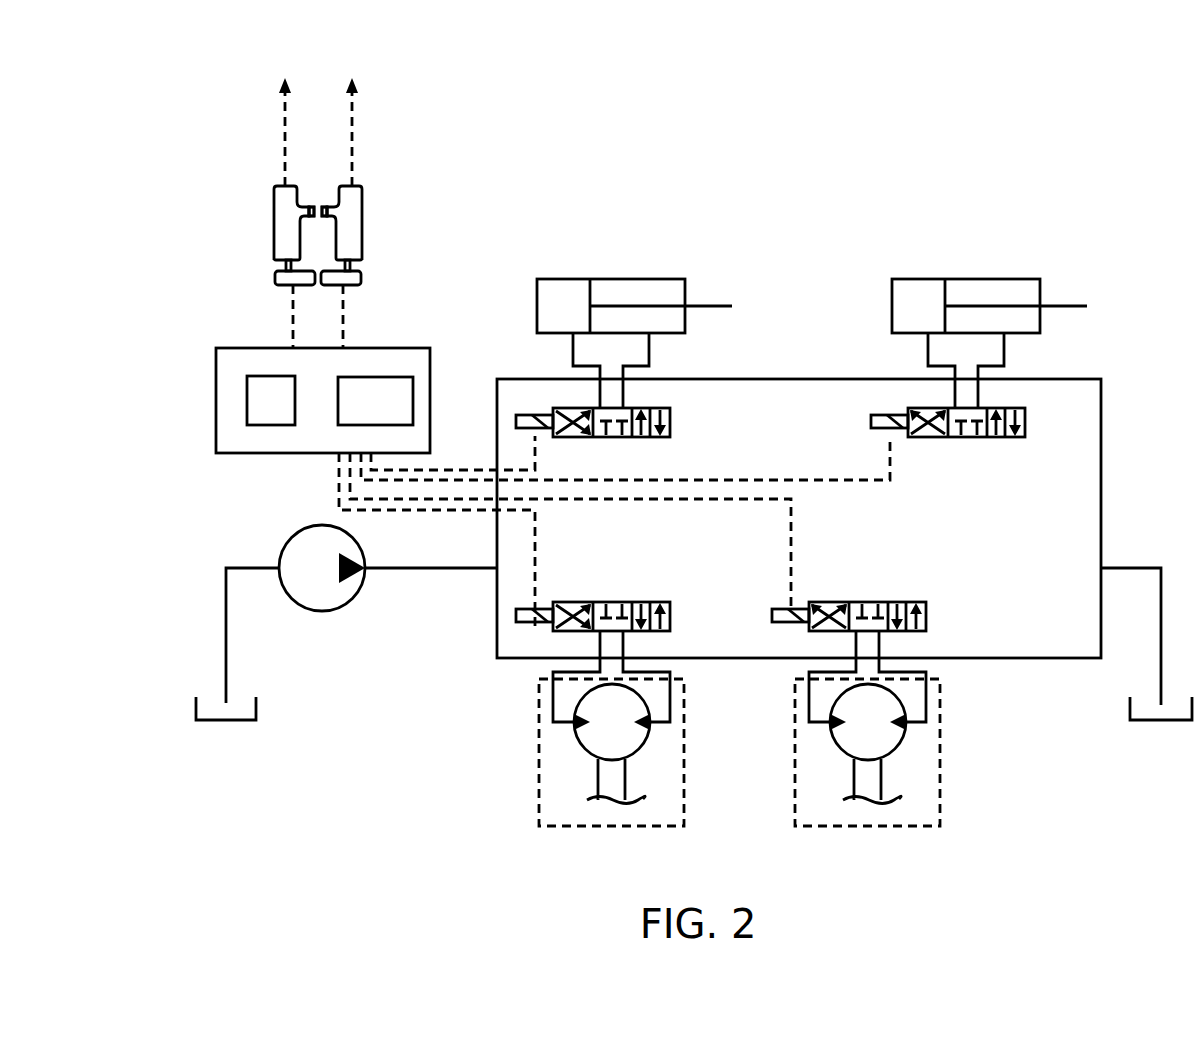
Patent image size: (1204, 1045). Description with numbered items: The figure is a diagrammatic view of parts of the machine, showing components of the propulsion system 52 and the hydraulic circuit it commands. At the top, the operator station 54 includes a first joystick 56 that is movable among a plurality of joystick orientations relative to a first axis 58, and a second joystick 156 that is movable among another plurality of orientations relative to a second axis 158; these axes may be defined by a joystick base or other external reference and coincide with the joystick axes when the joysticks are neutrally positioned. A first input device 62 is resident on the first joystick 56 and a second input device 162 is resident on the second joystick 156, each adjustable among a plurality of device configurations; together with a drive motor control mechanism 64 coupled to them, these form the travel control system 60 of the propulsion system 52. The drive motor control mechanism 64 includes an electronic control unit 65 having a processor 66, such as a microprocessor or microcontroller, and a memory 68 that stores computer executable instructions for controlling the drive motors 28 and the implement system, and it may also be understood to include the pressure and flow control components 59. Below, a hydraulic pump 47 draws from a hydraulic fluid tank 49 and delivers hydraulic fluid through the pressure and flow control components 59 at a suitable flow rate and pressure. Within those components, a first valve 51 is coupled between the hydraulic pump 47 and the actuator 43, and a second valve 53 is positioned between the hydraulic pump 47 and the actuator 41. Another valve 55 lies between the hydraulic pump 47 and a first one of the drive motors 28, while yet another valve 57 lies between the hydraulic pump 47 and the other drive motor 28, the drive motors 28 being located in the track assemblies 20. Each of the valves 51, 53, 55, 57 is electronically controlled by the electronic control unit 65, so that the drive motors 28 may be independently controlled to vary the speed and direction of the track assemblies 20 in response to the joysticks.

The track assemblies 20 is at (539, 782).
The drive motors 28 is at (647, 743).
The actuator 41 is at (1017, 279).
The actuator 43 is at (667, 279).
The hydraulic pump 47 is at (353, 606).
The hydraulic fluid tank 49 is at (230, 722).
The first valve 51 is at (672, 420).
The propulsion system 52 is at (232, 88).
The second valve 53 is at (1027, 420).
The operator station 54 is at (236, 212).
The valve 55 is at (672, 612).
The first joystick 56 is at (274, 232).
The valve 57 is at (929, 612).
The first axis 58 is at (284, 129).
The pressure and flow control components 59 is at (1101, 480).
The travel control system 60 is at (463, 276).
The first input device 62 is at (318, 218).
The drive motor control mechanism 64 is at (441, 333).
The electronic control unit 65 is at (216, 433).
The processor 66 is at (247, 380).
The memory 68 is at (413, 382).
The second joystick 156 is at (362, 232).
The second axis 158 is at (352, 129).
The second input device 162 is at (324, 206).